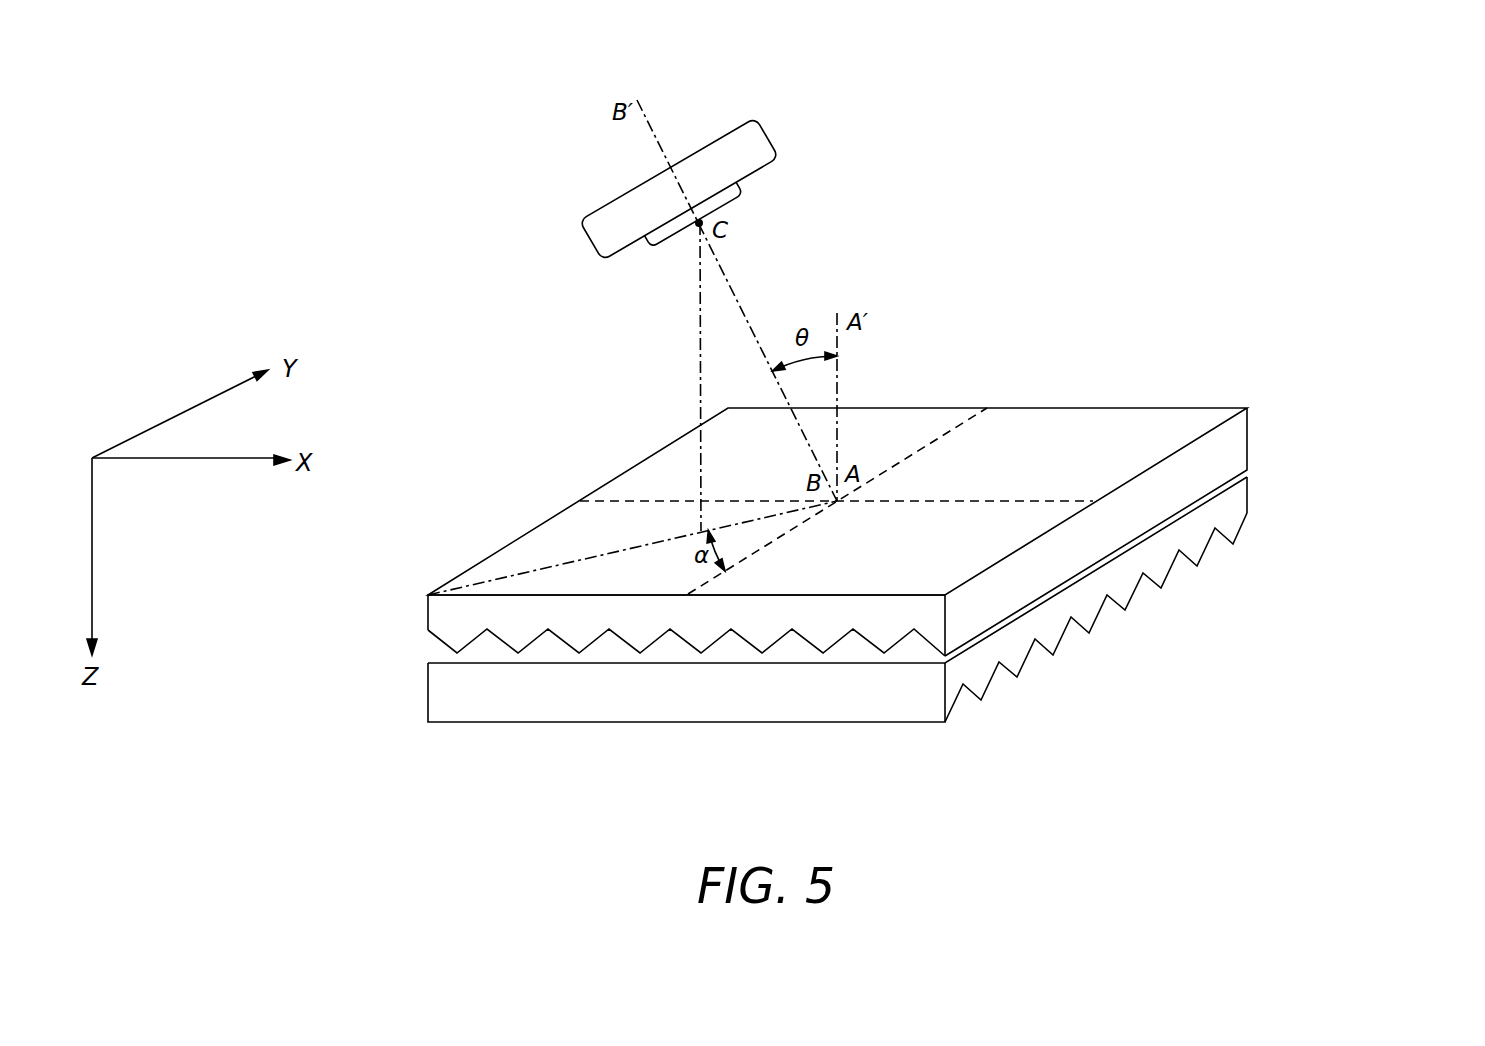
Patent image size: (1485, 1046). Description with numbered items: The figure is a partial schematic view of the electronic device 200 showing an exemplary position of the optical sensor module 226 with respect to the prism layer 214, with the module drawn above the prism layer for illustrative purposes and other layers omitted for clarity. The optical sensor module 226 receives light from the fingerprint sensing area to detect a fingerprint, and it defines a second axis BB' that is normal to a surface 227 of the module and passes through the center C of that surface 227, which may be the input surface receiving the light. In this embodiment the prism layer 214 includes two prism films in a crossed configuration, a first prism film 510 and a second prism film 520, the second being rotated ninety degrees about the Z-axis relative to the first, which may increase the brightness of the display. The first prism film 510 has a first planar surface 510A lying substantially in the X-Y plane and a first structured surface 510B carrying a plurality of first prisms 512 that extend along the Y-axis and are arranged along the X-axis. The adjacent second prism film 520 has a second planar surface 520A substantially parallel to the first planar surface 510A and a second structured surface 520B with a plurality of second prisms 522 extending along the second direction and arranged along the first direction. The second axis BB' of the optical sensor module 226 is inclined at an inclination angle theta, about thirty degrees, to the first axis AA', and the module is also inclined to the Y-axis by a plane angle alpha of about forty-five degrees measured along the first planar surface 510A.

The electronic device 200 is at (1229, 263).
The prism layer 214 is at (940, 606).
The optical sensor module 226 is at (625, 190).
The surface of the optical sensor module 227 is at (673, 237).
The first prism film 510 is at (898, 597).
The first planar surface 510A is at (905, 552).
The first structured surface 510B is at (900, 643).
The first prisms 512 is at (882, 643).
The second prism film 520 is at (892, 641).
The second planar surface 520A is at (742, 657).
The second structured surface 520B is at (1225, 545).
The second prisms 522 is at (1195, 547).